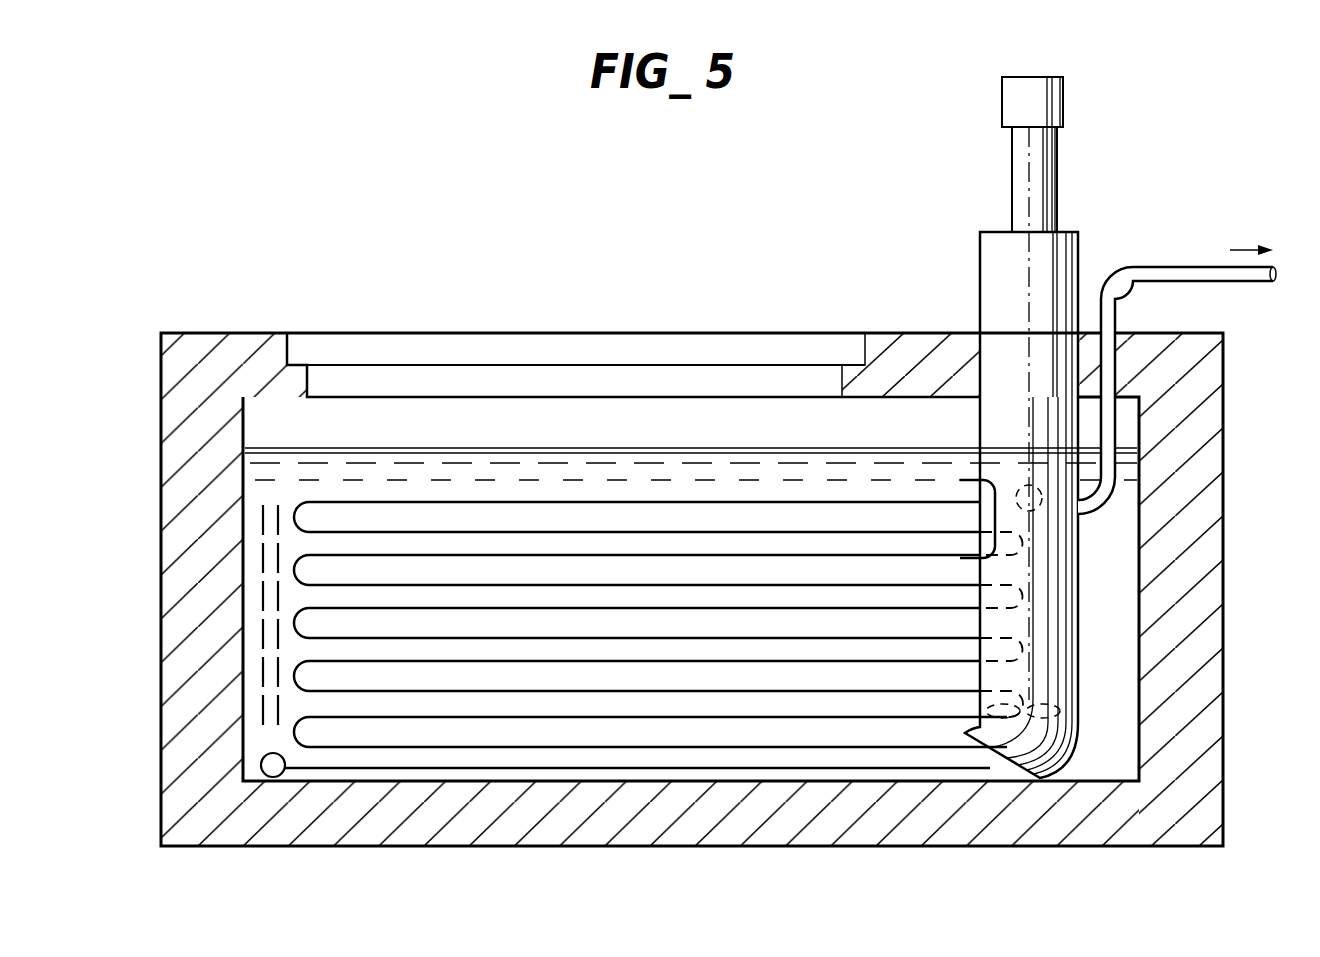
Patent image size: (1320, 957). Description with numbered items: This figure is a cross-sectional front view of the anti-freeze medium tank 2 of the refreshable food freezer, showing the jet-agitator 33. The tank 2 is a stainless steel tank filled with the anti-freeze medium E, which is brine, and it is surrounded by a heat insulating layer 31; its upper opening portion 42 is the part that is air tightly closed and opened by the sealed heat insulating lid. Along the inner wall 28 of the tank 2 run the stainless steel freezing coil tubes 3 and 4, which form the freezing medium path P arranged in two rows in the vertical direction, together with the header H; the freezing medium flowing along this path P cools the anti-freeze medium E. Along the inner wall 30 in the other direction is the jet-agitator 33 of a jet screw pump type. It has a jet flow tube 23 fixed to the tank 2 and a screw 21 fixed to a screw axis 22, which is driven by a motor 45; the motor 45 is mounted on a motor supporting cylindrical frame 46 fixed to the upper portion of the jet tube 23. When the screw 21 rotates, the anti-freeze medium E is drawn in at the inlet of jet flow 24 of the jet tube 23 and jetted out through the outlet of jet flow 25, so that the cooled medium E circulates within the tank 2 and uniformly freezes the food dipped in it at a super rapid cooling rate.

The anti-freeze medium tank 2 is at (247, 331).
The opening portion of the anti-freeze medium tank 42 is at (560, 346).
The heat insulating layer 31 is at (168, 801).
The inner wall of anti-freeze medium tank 30 is at (1140, 567).
The anti-freeze medium E is at (290, 445).
The freezing coil tube 3 is at (587, 718).
The freezing coil tube 4 is at (263, 627).
The inner wall of anti-freeze medium tank 28 is at (262, 565).
The header H is at (273, 773).
The inlet of jet flow 24 is at (975, 540).
The jet flow tube 23 is at (1083, 250).
The screw axis 22 is at (1035, 160).
The motor for screw 45 is at (1058, 105).
The motor supporting cylindrical frame 46 is at (1057, 185).
The jet-agitator 33 is at (1075, 520).
The freezing medium path P is at (1195, 265).
The outlet of jet flow 25 is at (1000, 740).
The screw 21 is at (1048, 745).